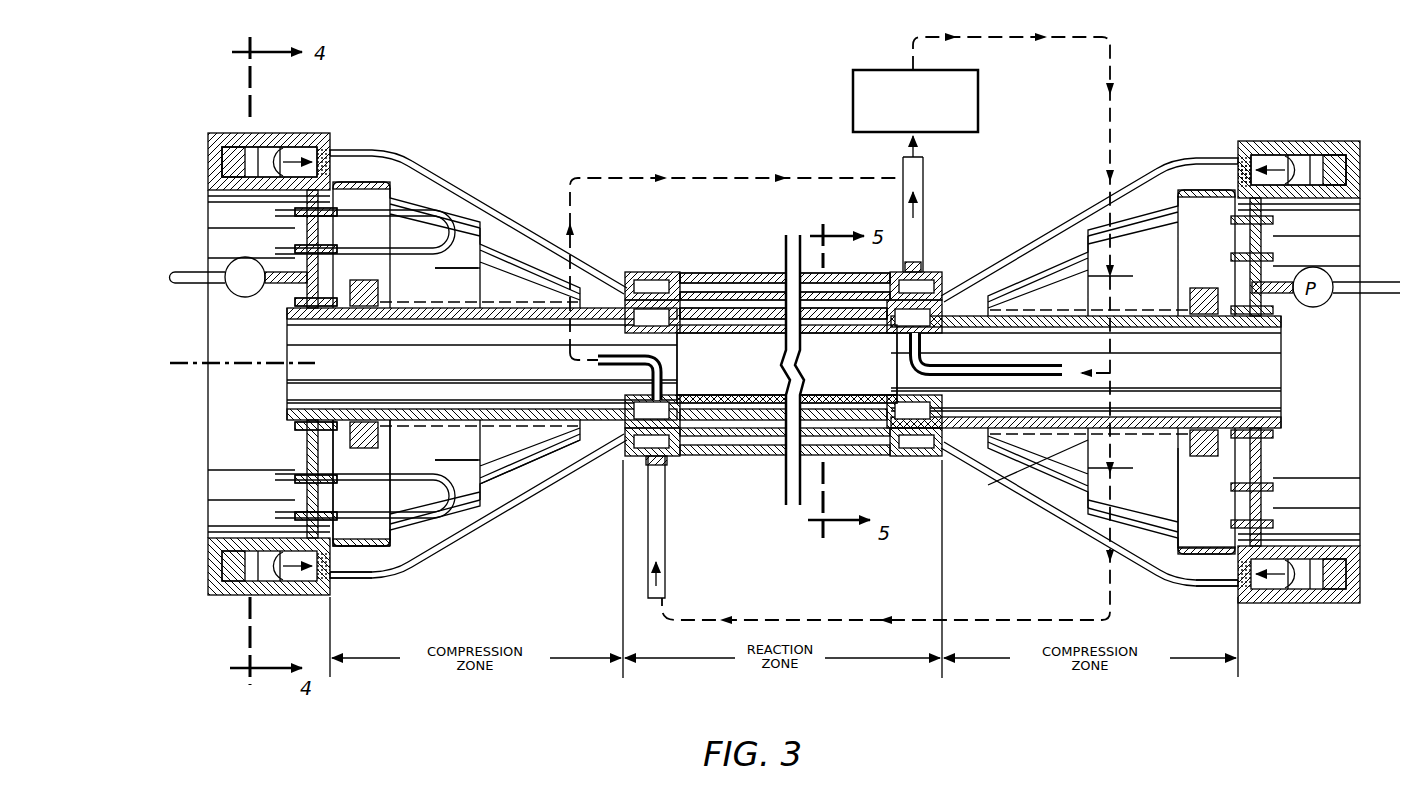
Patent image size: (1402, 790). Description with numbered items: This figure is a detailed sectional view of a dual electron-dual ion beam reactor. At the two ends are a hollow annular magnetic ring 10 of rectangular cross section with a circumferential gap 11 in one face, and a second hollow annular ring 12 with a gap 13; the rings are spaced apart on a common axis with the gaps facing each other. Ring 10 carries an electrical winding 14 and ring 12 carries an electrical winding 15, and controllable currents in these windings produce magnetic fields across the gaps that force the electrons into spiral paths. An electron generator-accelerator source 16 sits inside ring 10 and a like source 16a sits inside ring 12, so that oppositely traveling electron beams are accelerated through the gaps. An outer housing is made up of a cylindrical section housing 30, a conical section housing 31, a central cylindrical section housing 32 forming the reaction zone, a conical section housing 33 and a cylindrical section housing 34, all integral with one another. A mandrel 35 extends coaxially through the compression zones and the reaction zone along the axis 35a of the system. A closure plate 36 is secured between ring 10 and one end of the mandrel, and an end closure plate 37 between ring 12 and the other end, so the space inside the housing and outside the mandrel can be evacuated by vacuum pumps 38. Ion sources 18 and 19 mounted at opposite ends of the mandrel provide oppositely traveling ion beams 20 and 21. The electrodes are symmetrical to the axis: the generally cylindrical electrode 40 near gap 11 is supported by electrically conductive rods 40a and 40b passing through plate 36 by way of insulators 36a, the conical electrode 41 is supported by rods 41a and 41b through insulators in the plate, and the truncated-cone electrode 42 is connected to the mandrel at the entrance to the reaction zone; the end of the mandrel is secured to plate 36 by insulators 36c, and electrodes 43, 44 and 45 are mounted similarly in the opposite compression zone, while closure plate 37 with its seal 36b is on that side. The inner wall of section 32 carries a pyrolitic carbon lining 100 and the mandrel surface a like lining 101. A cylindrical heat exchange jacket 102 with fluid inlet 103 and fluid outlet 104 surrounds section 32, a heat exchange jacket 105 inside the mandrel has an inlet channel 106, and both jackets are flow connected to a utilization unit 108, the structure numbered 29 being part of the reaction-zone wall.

The hollow annular magnetic ring 10 is at (223, 132).
The circumferential gap 11 is at (346, 152).
The second hollow annular ring 12 is at (1330, 141).
The gap 13 is at (1242, 165).
The electrical winding 14 is at (208, 572).
The electrical winding 15 is at (1360, 168).
The electron generator-accelerator source 16 is at (268, 147).
The electron generator-accelerator source 16a is at (1300, 155).
The ion source 18 is at (367, 306).
The ion source 19 is at (1204, 316).
The ion beam 20 is at (512, 402).
The ion beam 21 is at (1162, 330).
The reaction chamber wall 29 is at (865, 412).
The cylindrical section housing 30 is at (352, 581).
The conical section housing 31 is at (500, 503).
The cylindrical section housing 32 is at (733, 455).
The conical section housing 33 is at (1046, 496).
The cylindrical section housing 34 is at (1216, 590).
The mandrel 35 is at (450, 404).
The axis 35a is at (238, 368).
The closure plate 36 is at (305, 447).
The insulators 36a is at (292, 212).
The seal fluid passage 36b is at (295, 250).
The insulators 36c is at (292, 305).
The end closure plate 37 is at (1270, 442).
The vacuum pumps 38 is at (243, 297).
The electrode 40 is at (376, 566).
The electrically conductive rod 40a is at (340, 226).
The electrically conductive rod 40b is at (348, 516).
The electrode 41 is at (430, 522).
The rod 41a is at (433, 256).
The rod 41b is at (420, 480).
The electrode 42 is at (560, 458).
The electrode 43 is at (1176, 576).
The electrode 44 is at (1096, 520).
The electrode 45 is at (1030, 470).
The lining 100 is at (700, 278).
The lining 101 is at (741, 320).
The cylindrical heat exchange jacket 102 is at (755, 292).
The fluid inlet 103 is at (666, 516).
The fluid outlet 104 is at (666, 396).
The heat exchange jacket 105 is at (762, 333).
The inlet channel 106 is at (935, 344).
The utilization unit 108 is at (932, 107).